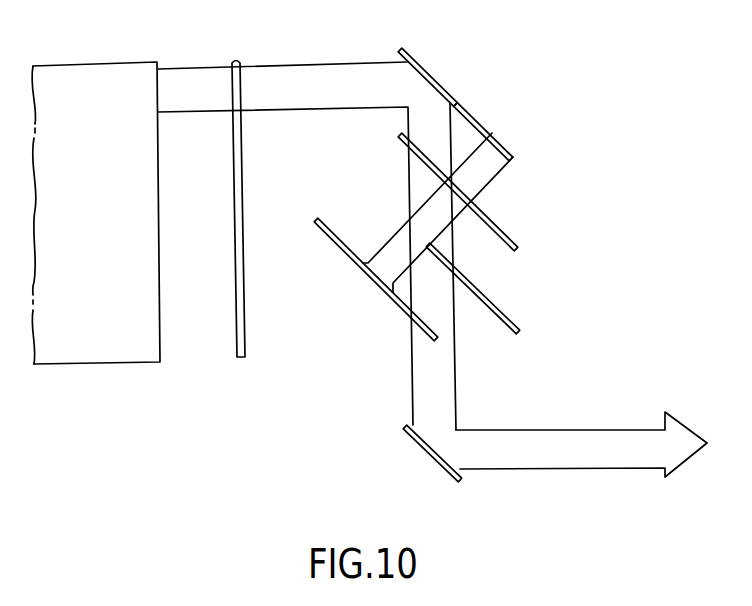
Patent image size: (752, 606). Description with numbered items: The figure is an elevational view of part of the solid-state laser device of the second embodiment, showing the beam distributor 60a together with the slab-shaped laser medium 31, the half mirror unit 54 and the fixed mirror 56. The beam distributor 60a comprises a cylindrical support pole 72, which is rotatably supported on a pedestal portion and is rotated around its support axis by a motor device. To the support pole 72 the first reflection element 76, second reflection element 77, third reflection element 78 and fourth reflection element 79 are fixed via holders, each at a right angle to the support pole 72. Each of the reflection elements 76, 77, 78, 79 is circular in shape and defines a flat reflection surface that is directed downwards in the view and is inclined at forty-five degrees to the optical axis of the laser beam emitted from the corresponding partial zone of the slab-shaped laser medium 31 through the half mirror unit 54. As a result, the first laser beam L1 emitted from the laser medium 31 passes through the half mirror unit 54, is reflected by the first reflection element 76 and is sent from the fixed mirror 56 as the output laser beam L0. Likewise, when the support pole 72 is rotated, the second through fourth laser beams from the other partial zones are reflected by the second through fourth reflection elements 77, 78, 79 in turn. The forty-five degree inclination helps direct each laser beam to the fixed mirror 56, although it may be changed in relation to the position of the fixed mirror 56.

The slab-shaped laser medium 31 is at (80, 348).
The half mirror unit 54 is at (237, 360).
The fixed mirror 56 is at (428, 454).
The beam distributor 60a is at (475, 239).
The support pole 72 is at (497, 147).
The first reflection element 76 is at (415, 58).
The second reflection element 77 is at (510, 233).
The third reflection element 78 is at (508, 313).
The fourth reflection element 79 is at (331, 240).
The first laser beam L1 is at (321, 75).
The output laser beam L0 is at (567, 459).